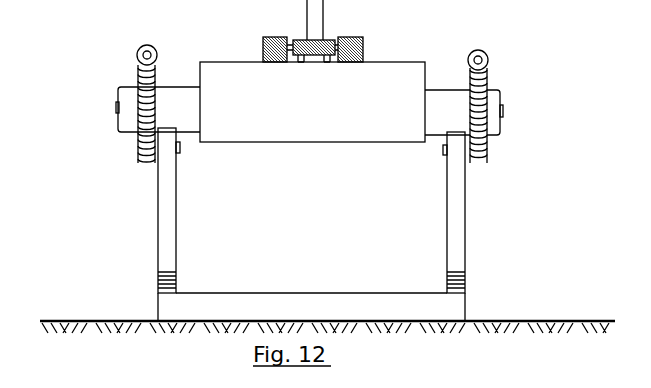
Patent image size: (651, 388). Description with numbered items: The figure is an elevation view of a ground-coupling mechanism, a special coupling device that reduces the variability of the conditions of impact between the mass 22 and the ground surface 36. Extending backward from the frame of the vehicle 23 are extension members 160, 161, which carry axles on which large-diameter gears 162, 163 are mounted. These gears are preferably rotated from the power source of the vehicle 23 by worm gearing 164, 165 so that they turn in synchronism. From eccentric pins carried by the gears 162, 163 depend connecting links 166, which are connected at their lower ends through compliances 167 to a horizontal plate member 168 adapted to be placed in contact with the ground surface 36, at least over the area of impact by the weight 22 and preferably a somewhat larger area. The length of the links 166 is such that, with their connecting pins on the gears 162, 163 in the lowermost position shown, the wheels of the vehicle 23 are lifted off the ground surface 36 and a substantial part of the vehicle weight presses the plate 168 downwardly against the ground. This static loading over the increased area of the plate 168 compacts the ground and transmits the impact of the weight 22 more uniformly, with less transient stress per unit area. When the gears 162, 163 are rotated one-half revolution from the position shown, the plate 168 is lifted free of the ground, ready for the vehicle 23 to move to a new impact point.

The mass 22 is at (360, 68).
The vehicle 23 is at (160, 92).
The ground surface 36 is at (497, 320).
The extension member 160 is at (500, 130).
The extension member 161 is at (128, 118).
The large-diameter gear 162 is at (488, 80).
The large-diameter gear 163 is at (138, 77).
The worm gearing 164 is at (488, 53).
The worm gearing 165 is at (138, 53).
The connecting links 166 is at (168, 210).
The compliances 167 is at (177, 275).
The horizontal plate member 168 is at (288, 300).